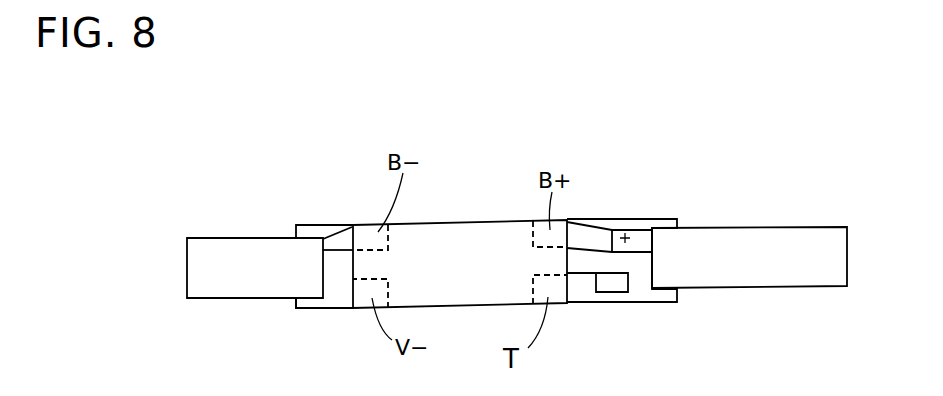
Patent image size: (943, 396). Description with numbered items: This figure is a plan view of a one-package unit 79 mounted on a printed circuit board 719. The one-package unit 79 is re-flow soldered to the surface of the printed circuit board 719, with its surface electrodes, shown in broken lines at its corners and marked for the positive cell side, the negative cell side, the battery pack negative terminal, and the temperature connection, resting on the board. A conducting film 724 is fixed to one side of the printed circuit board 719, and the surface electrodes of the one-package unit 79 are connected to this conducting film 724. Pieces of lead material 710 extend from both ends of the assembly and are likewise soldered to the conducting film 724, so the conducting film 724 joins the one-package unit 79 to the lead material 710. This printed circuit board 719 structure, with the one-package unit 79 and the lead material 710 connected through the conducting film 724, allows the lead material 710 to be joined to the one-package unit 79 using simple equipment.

The lead material 710 is at (225, 250).
The conducting film 724 is at (347, 228).
The one-package unit 79 is at (465, 235).
The printed circuit board 719 is at (318, 302).